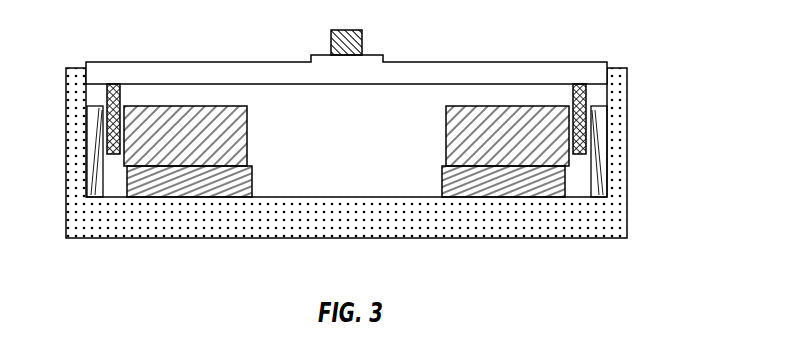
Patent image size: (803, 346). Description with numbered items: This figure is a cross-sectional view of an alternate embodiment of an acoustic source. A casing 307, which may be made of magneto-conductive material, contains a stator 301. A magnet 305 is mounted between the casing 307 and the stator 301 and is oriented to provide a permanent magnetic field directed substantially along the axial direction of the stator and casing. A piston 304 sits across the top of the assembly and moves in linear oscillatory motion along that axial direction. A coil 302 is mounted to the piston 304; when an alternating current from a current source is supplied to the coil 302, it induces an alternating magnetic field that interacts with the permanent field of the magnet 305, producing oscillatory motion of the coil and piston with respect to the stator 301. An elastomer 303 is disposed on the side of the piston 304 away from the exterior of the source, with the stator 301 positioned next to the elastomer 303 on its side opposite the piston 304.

The stator 301 is at (446, 138).
The coil 302 is at (588, 94).
The elastomer 303 is at (270, 97).
The piston 304 is at (511, 52).
The magnet 305 is at (446, 180).
The casing 307 is at (623, 178).